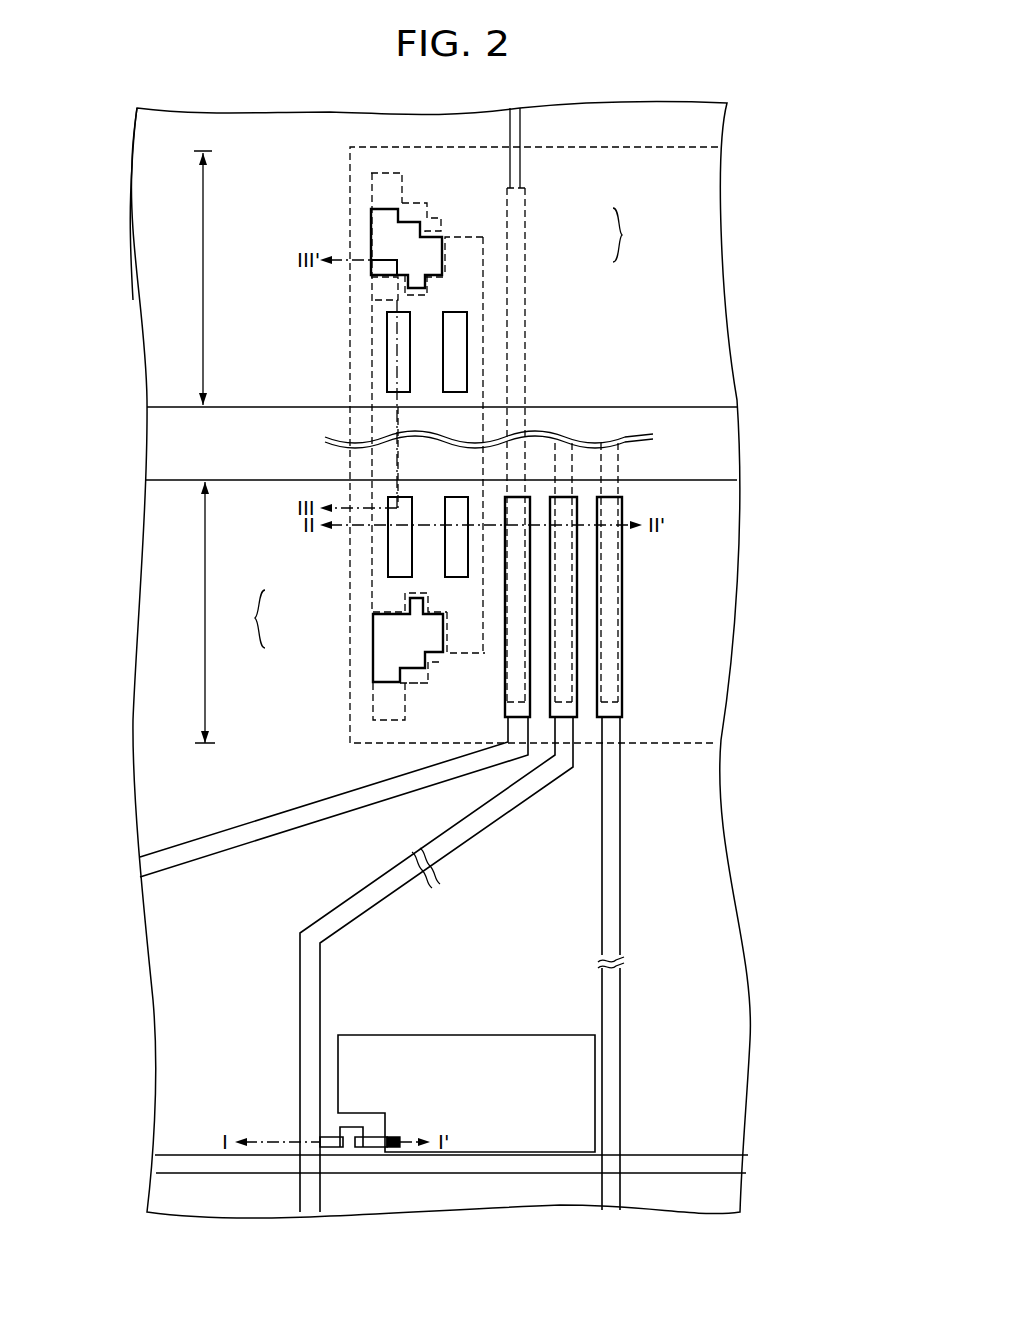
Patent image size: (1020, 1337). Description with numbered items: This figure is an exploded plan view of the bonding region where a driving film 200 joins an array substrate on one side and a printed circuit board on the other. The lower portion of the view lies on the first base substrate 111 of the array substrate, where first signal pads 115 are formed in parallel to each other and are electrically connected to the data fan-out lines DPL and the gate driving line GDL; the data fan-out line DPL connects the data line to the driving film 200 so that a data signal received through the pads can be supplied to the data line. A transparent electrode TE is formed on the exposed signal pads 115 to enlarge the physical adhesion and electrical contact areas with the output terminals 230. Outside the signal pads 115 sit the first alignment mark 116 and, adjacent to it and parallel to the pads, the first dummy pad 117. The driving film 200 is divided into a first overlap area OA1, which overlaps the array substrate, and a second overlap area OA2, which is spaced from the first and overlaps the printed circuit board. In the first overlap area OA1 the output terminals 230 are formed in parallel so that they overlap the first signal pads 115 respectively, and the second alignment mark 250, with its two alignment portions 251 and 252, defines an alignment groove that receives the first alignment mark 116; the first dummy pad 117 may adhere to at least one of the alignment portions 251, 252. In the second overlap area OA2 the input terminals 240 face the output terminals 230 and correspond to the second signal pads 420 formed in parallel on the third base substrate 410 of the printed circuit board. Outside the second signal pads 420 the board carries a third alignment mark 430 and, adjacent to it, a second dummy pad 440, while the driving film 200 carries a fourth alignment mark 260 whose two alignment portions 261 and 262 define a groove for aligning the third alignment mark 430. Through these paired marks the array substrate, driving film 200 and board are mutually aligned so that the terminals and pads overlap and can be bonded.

The first base substrate 111 is at (147, 720).
The third base substrate 410 is at (147, 163).
The driving film 200 is at (566, 147).
The second signal pad 420 is at (520, 174).
The input terminal 240 is at (518, 325).
The alignment portion 262 is at (440, 222).
The alignment portion 261 is at (474, 251).
The fourth alignment mark 260 is at (635, 235).
The third alignment mark 430 is at (377, 223).
The second dummy pad 440 is at (395, 342).
The first dummy pad 117 is at (390, 563).
The alignment portion 252 is at (389, 693).
The alignment portion 251 is at (372, 597).
The second alignment mark 250 is at (247, 619).
The first alignment mark 116 is at (372, 672).
The output terminal 230 is at (612, 640).
The transparent electrode TE is at (625, 678).
The first signal pad 115 is at (615, 723).
The gate driving line GDL is at (192, 850).
The data fan-out line DPL is at (368, 900).
The second overlap area OA2 is at (187, 278).
The first overlap area OA1 is at (189, 612).